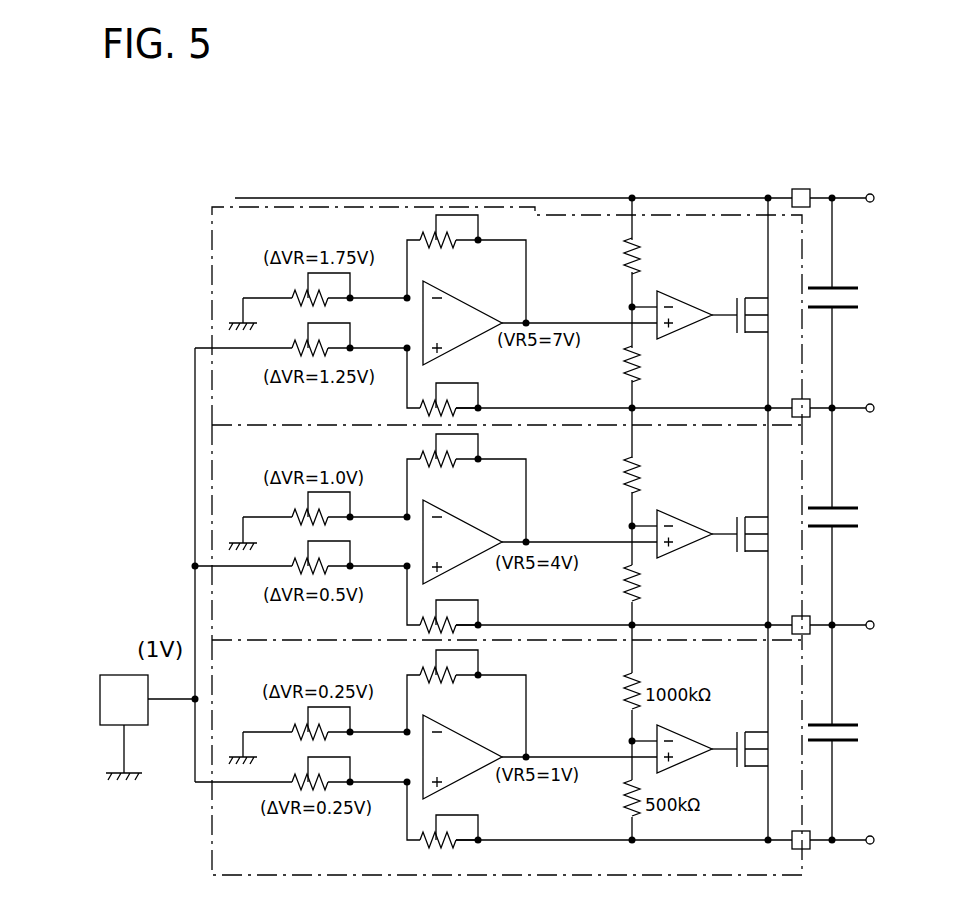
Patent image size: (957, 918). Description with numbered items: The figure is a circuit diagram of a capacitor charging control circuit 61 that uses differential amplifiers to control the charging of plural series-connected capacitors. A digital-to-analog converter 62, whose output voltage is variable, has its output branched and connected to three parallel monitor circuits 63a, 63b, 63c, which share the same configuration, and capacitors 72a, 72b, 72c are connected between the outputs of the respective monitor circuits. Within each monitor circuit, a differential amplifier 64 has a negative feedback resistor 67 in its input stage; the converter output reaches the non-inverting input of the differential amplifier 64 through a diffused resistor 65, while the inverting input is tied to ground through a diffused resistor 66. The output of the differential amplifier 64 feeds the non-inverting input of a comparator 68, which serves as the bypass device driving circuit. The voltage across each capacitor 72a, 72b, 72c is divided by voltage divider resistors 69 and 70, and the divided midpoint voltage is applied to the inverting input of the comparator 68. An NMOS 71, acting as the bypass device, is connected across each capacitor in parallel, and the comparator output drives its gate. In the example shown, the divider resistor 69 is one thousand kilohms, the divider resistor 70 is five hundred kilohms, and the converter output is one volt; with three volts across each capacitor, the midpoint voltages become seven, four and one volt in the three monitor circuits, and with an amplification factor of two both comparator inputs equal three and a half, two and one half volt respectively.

The capacitor charging control circuit 61 is at (715, 168).
The digital-to-analog converter 62 is at (112, 683).
The parallel monitor circuit 63a is at (235, 231).
The parallel monitor circuit 63b is at (232, 453).
The parallel monitor circuit 63c is at (225, 815).
The differential amplifier 64 is at (460, 318).
The diffused resistor 65 is at (297, 350).
The diffused resistor 66 is at (297, 296).
The negative feedback resistor 67 is at (428, 238).
The comparator 68 is at (688, 310).
The voltage divider resistor 69 is at (627, 258).
The voltage divider resistor 70 is at (627, 368).
The NMOS 71 is at (751, 333).
The capacitor 72a is at (860, 287).
The capacitor 72b is at (860, 507).
The capacitor 72c is at (860, 723).